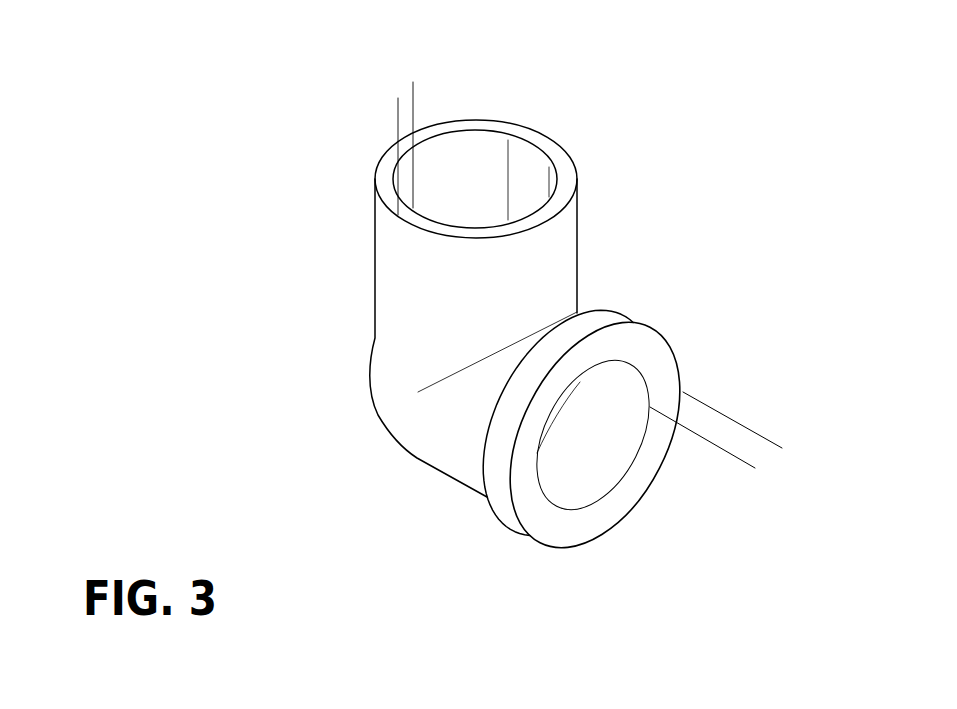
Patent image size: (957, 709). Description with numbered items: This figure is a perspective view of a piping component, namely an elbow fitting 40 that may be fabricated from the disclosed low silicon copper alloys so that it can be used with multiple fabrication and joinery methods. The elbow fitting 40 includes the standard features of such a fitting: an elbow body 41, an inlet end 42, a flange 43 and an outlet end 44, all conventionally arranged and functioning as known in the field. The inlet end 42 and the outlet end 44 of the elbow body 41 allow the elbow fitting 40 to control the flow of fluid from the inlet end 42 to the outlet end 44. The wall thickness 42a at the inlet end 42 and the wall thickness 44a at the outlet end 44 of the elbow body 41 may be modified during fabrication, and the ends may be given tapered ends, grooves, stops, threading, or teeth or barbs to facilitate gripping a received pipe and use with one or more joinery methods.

The elbow fitting 40 is at (601, 311).
The elbow body 41 is at (557, 272).
The inlet end 42 is at (587, 440).
The wall thickness 42a is at (840, 407).
The flange 43 is at (657, 353).
The outlet end 44 is at (467, 165).
The wall thickness 44a is at (413, 93).